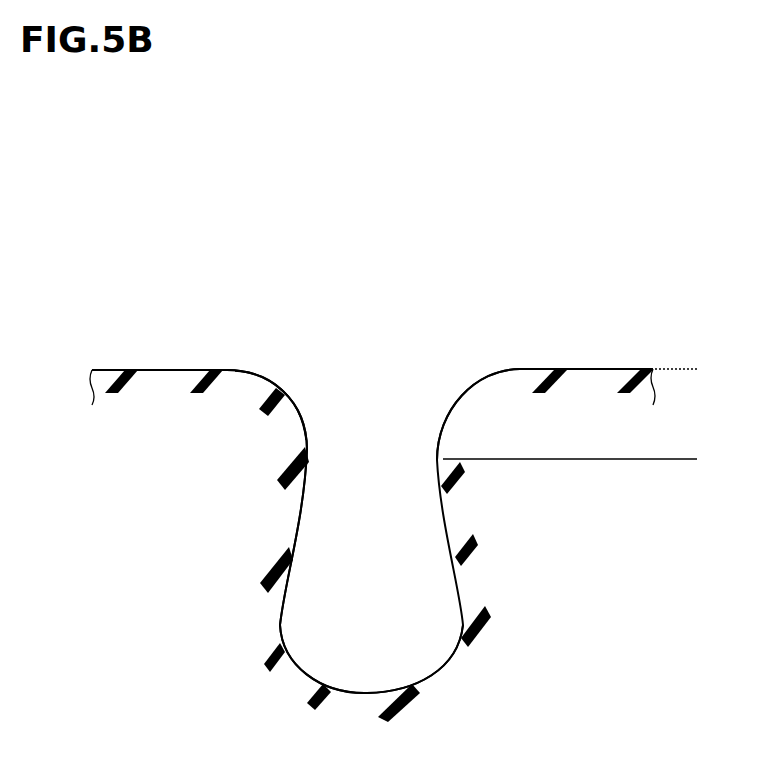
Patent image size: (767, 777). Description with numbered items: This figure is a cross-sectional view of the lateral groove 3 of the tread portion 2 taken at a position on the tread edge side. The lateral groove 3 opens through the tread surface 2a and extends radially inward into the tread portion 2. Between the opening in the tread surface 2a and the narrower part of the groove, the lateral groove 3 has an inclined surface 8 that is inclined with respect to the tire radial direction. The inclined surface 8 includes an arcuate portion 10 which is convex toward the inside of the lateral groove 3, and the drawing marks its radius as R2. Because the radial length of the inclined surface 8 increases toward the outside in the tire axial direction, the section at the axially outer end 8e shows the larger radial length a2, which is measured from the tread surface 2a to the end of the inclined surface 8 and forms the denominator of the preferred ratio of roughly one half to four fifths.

The tread portion 2 is at (403, 282).
The tread surface 2a is at (163, 368).
The inclined surface 8 is at (283, 386).
The arcuate portion 10 is at (252, 378).
The lateral groove 3 is at (383, 595).
The axially outer end 8e is at (168, 623).
The corner radius R2 is at (454, 409).
The length in the tire radial direction of the inclined surface at the axially outer a2 is at (692, 369).